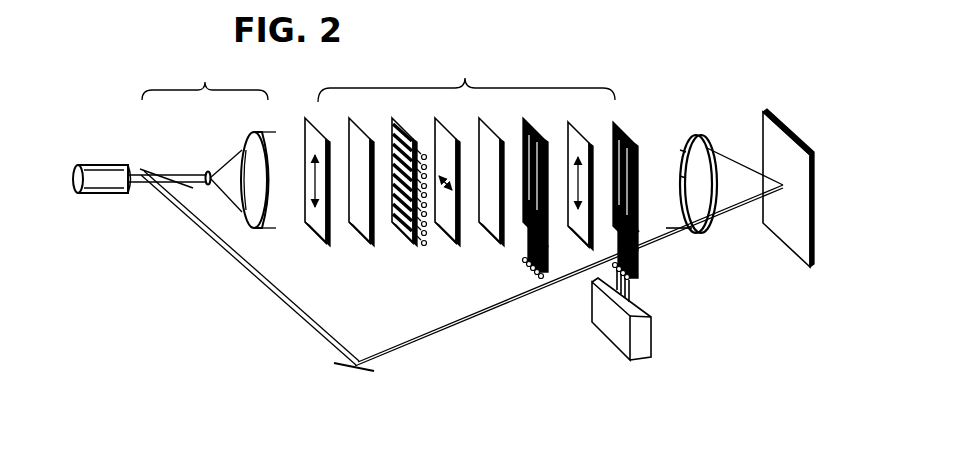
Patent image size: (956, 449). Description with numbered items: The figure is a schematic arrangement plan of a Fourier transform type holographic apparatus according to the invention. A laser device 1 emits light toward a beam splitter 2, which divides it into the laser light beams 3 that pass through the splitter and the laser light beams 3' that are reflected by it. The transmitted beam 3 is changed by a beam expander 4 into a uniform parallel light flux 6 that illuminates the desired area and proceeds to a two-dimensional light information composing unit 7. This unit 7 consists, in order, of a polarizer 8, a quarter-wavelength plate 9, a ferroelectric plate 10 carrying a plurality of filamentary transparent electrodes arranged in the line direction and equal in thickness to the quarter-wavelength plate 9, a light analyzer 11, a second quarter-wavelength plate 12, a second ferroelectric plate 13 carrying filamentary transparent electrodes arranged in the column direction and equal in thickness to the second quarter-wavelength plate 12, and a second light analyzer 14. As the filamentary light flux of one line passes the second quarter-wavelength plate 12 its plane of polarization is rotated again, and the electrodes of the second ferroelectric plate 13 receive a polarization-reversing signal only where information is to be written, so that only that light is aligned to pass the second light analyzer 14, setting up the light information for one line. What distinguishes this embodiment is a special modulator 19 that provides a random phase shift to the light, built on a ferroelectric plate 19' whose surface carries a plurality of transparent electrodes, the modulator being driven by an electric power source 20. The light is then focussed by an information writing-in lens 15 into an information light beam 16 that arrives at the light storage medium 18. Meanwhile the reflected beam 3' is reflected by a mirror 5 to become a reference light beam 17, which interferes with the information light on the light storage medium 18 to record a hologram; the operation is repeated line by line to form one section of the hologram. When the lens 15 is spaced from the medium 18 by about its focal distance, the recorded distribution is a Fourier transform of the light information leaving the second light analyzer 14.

The laser device 1 is at (113, 165).
The beam splitter 2 is at (148, 172).
The laser light beams which have passed through the beam splitter 3 is at (212, 175).
The laser light beams which were reflected by the beam splitter 3' is at (250, 268).
The beam expander 4 is at (205, 75).
The mirror 5 is at (365, 372).
The uniform parallel light flux 6 is at (282, 162).
The two-dimensional light information composing unit 7 is at (466, 75).
The polarizer 8 is at (316, 228).
The quarter-wavelength plate 9 is at (365, 226).
The ferroelectric plate 10 is at (405, 228).
The light analyzer 11 is at (448, 228).
The second quarter-wavelength plate 12 is at (487, 145).
The second ferroelectric plate 13 is at (538, 125).
The second light analyzer 14 is at (583, 135).
The information writing-in lens 15 is at (697, 137).
The information light beam 16 is at (733, 177).
The reference light beam 17 is at (479, 317).
The light storage medium 18 is at (778, 140).
The modulator 19 is at (637, 195).
The ferroelectric plate 19' is at (659, 249).
The electric power source 20 is at (648, 330).